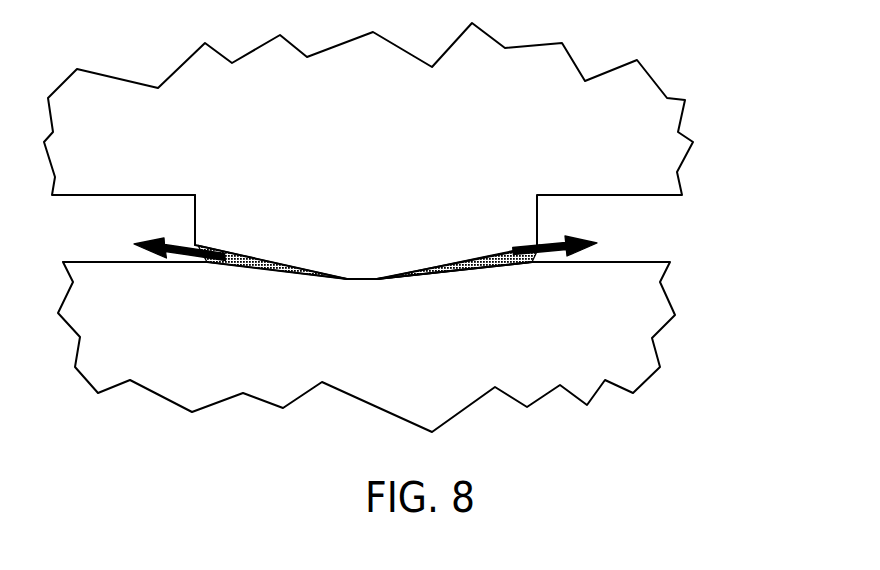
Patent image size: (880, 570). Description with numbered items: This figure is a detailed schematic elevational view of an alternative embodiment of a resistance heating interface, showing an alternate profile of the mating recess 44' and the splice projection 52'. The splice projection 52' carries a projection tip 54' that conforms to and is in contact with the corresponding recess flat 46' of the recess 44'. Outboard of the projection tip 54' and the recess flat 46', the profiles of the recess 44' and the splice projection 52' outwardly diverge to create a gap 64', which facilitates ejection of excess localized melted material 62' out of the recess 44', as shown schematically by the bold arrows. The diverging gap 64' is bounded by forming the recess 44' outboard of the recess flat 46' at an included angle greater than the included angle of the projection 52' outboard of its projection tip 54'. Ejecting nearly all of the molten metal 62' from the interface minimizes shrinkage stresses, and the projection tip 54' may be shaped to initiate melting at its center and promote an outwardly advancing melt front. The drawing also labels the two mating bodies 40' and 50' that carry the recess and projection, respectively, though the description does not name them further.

The first component (lower member) 40' is at (408, 347).
The second component (upper member) 50' is at (432, 151).
The splice projection 52' is at (158, 220).
The projection tip 54' is at (372, 236).
The recess flat 46' is at (394, 327).
The mating recess 44' is at (481, 314).
The melted material 62' is at (403, 290).
The gap 64' is at (366, 204).